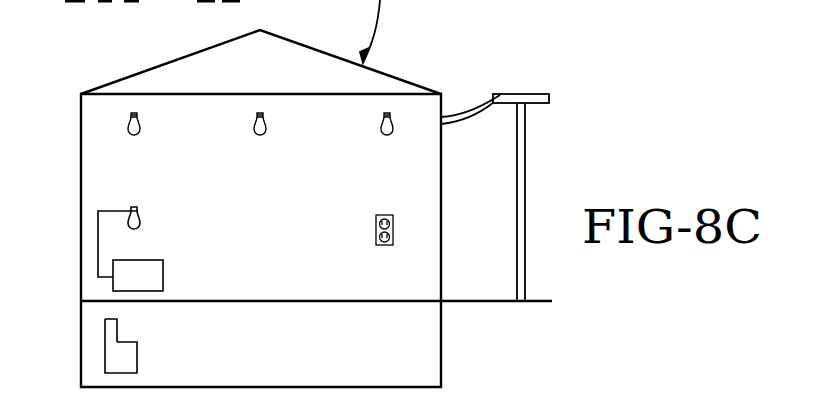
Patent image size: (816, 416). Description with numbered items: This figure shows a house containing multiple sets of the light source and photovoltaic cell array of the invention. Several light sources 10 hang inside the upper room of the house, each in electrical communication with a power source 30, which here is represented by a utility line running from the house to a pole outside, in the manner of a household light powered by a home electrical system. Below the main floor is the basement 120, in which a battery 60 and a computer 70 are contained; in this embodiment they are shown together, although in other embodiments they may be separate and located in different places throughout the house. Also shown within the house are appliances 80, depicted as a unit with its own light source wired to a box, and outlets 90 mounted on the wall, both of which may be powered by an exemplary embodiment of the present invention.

The light source 10 is at (133, 136).
The power source 30 is at (475, 108).
The battery 60 is at (122, 360).
The computer 70 is at (113, 330).
The appliances 80 is at (157, 260).
The outlets 90 is at (387, 215).
The basement 120 is at (380, 358).